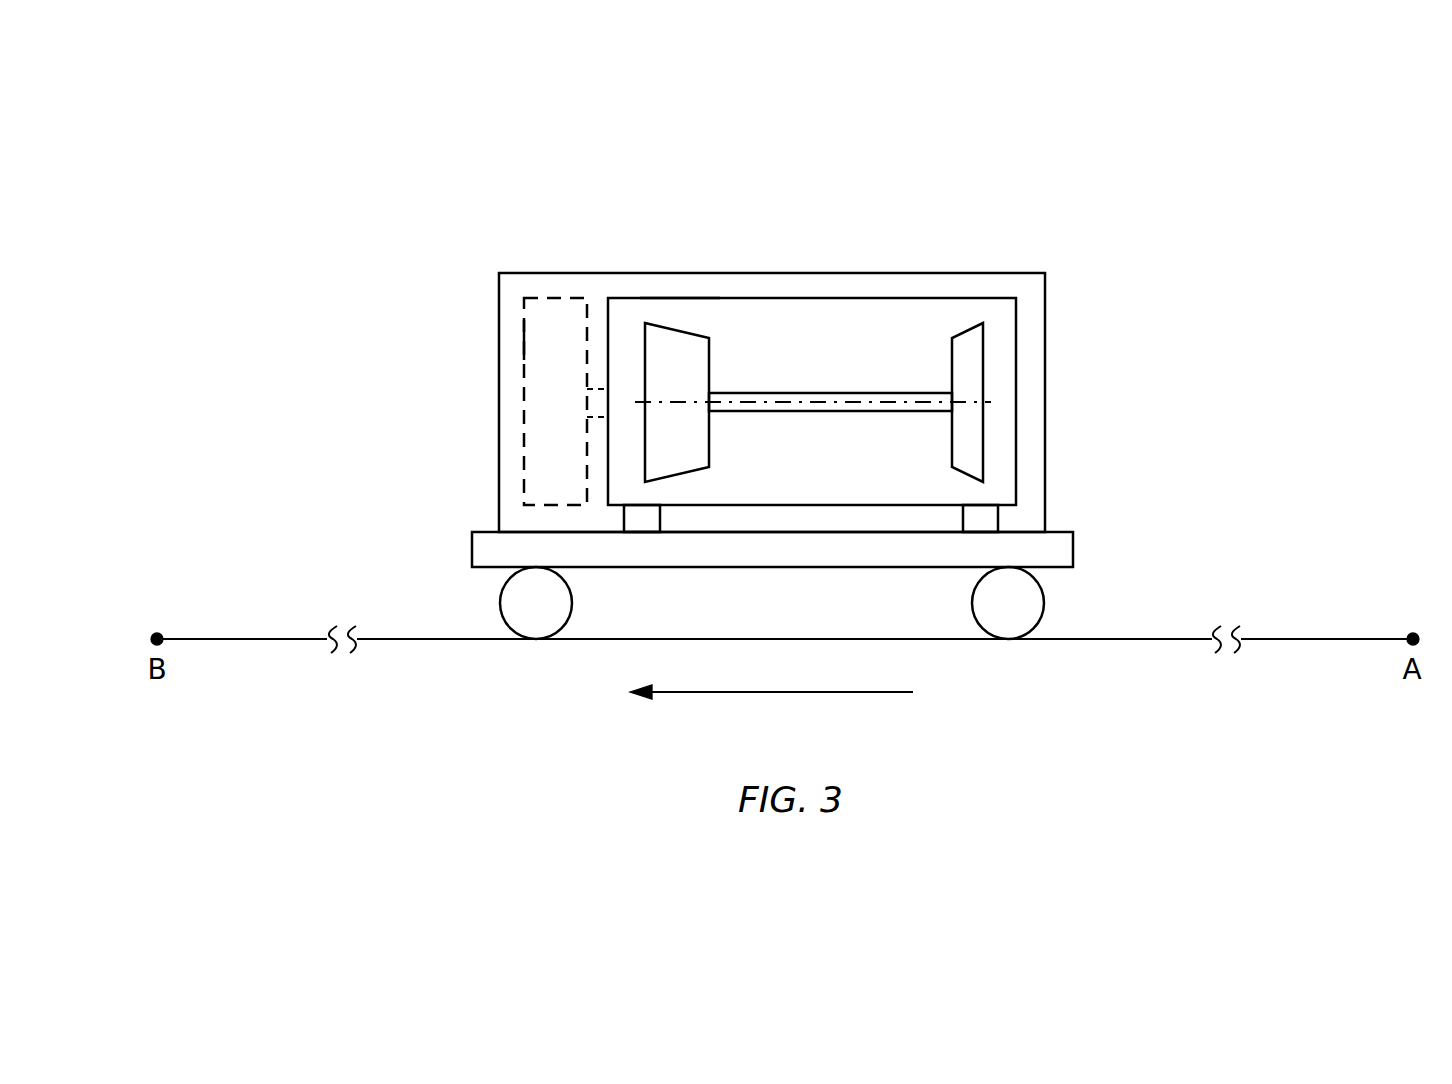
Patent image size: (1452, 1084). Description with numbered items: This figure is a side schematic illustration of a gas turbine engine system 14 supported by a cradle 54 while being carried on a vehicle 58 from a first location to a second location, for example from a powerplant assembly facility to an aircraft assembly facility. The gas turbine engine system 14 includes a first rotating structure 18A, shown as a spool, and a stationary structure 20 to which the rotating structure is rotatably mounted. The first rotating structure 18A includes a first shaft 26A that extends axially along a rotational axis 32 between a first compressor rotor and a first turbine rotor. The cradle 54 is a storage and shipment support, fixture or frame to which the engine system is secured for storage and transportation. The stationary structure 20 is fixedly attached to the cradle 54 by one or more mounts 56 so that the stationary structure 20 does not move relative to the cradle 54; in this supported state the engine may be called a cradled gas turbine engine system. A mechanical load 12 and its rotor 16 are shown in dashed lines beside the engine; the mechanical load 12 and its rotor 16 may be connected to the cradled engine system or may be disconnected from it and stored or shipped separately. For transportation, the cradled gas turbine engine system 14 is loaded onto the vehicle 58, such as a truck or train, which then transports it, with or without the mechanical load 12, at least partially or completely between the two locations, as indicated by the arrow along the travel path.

The mechanical load 12 is at (556, 298).
The gas turbine engine system 14 is at (644, 298).
The rotor 16 is at (524, 333).
The first rotating structure 18A is at (712, 330).
The stationary structure 20 is at (675, 298).
The first shaft 26A is at (824, 392).
The rotational axis 32 is at (752, 405).
The cradle 54 is at (890, 275).
The mounts 56 is at (661, 522).
The vehicle 58 is at (1081, 550).